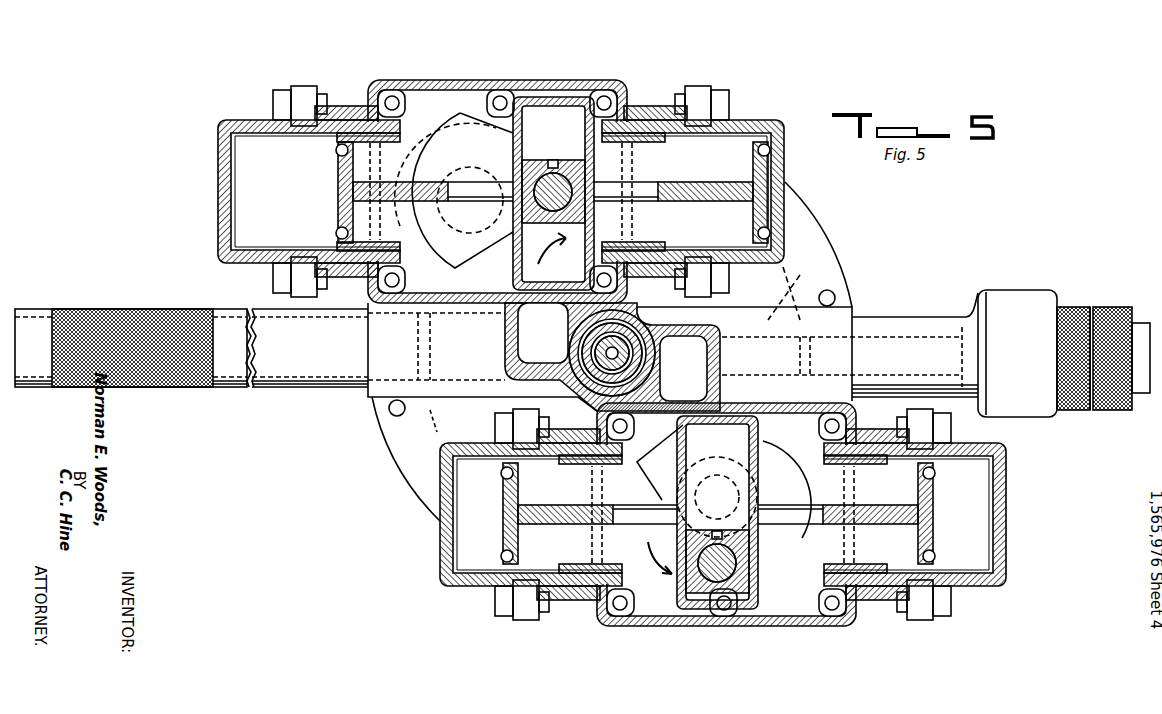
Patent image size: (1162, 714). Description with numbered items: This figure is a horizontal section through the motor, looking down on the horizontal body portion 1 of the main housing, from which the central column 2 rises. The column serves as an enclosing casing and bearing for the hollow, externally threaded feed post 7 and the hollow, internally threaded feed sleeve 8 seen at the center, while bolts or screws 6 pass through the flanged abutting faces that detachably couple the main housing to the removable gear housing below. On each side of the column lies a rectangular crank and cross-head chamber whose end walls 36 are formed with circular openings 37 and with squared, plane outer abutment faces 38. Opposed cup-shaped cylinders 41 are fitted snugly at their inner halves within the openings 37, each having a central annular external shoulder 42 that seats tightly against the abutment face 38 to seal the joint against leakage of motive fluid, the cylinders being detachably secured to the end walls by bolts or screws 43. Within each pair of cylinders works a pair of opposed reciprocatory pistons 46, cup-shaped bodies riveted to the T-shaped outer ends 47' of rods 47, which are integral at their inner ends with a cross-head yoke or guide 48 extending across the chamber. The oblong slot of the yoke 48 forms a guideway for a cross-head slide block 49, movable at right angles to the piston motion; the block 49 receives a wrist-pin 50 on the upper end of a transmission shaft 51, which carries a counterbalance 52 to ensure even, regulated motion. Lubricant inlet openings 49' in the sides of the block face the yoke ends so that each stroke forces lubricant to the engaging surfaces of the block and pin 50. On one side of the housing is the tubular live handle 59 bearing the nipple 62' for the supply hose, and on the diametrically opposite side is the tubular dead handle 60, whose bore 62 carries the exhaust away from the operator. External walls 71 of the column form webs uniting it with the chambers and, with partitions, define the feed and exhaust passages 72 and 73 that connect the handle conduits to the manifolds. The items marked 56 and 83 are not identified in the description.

The horizontal body portion 1 is at (645, 383).
The central column 2 is at (654, 353).
The bolts or screws 6 is at (607, 351).
The feed post 7 is at (574, 353).
The feed sleeve 8 is at (678, 353).
The end walls 36 is at (637, 356).
The circular openings 37 is at (612, 353).
The outer abutment faces 38 is at (651, 364).
The cup-shaped cylinders 41 is at (615, 354).
The annular external shoulder 42 is at (619, 396).
The bolts or screws 43 is at (600, 340).
The reciprocatory pistons 46 is at (672, 360).
The rods 47 is at (699, 353).
The T-shaped outer ends 47' is at (679, 353).
The cross-head yoke 48 is at (635, 360).
The cross-head slide block 49 is at (630, 358).
The lubricant inlet openings 49' is at (638, 393).
The wrist-pin 50 is at (698, 353).
The transmission shaft 51 is at (607, 330).
The counterbalance 52 is at (611, 325).
The direction arrow 56 is at (678, 403).
The live handle 59 is at (992, 352).
The dead handle 60 is at (133, 366).
The bore 62 is at (309, 348).
The nipple 62' is at (1130, 386).
The external walls 71 is at (612, 357).
The feed passage 72 is at (683, 368).
The exhaust passage 73 is at (543, 333).
The bearing 83 is at (555, 355).